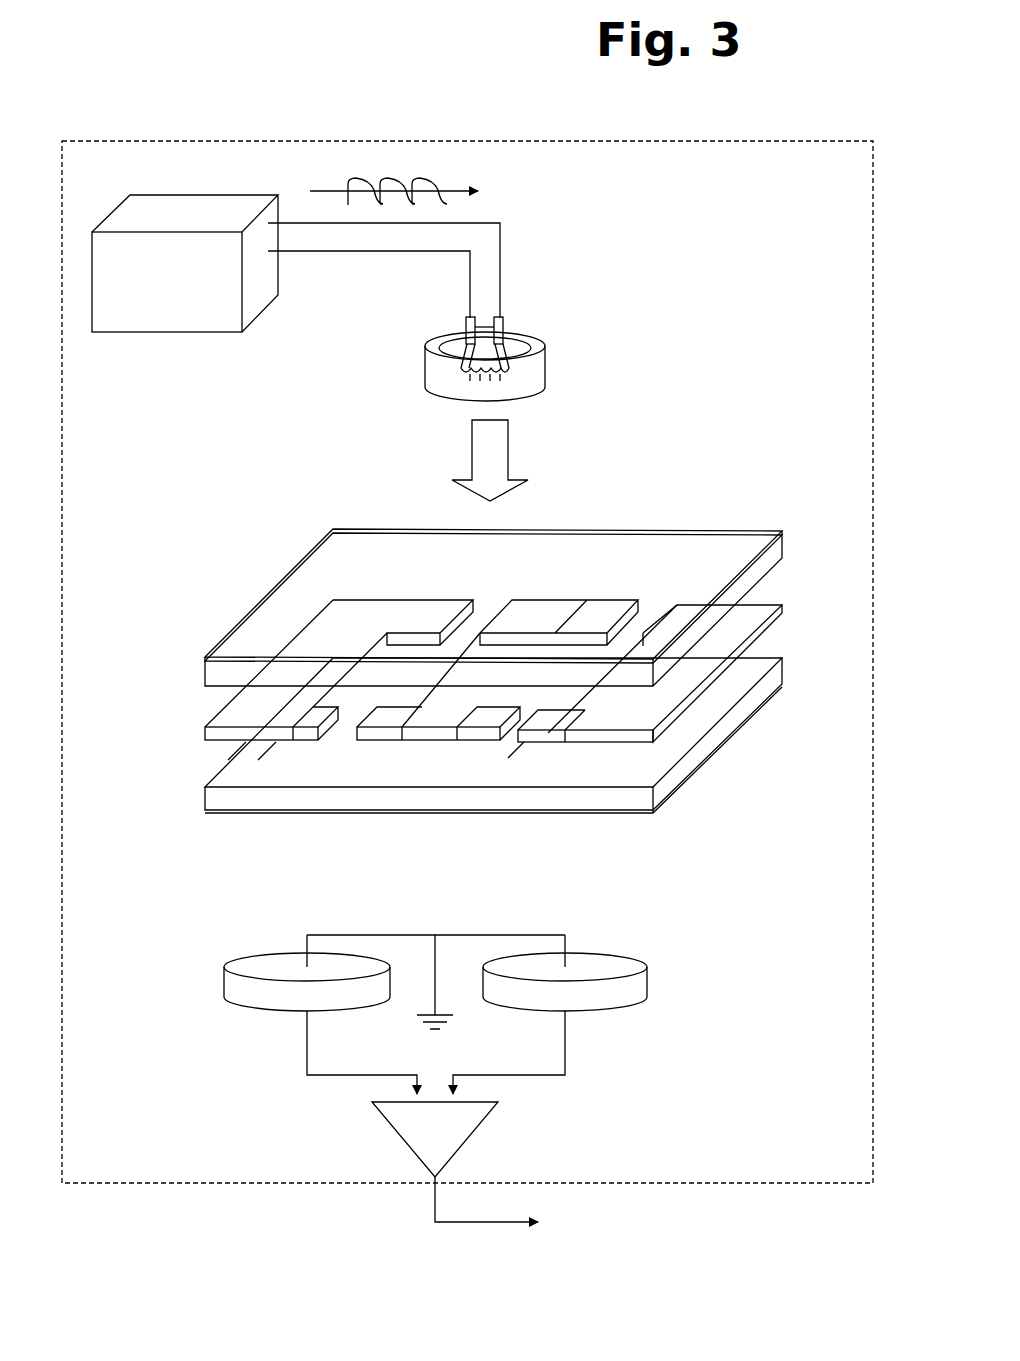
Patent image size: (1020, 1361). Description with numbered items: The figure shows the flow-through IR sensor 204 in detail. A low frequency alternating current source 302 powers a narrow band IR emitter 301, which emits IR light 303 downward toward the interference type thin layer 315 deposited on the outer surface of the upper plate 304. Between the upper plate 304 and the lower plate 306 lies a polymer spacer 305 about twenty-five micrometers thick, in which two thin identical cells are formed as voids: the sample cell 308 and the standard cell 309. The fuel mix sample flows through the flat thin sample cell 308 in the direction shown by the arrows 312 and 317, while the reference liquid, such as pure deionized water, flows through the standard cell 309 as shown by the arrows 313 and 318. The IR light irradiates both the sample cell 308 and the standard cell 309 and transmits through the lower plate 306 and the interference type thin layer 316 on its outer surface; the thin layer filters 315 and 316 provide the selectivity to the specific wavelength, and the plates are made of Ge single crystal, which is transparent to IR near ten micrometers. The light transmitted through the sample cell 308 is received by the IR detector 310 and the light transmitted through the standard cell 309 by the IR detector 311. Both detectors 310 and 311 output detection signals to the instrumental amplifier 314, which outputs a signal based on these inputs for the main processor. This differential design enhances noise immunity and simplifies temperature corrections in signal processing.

The flow-through IR sensor 204 is at (467, 662).
The narrow band IR emitter 301 is at (492, 352).
The low frequency alternating current source 302 is at (296, 244).
The IR light 303 is at (507, 460).
The upper plate 304 is at (781, 553).
The spacer 305 is at (782, 613).
The lower plate 306 is at (238, 769).
The sample cell 308 is at (367, 693).
The standard cell 309 is at (578, 693).
The IR detector 310 is at (318, 1014).
The IR detector 311 is at (550, 1014).
The arrow 312 is at (503, 586).
The arrow 313 is at (666, 586).
The instrumental amplifier 314 is at (445, 1162).
The interference type thin layer 315 is at (767, 528).
The interference type thin layer 316 is at (658, 809).
The arrow 317 is at (333, 760).
The arrow 318 is at (500, 760).